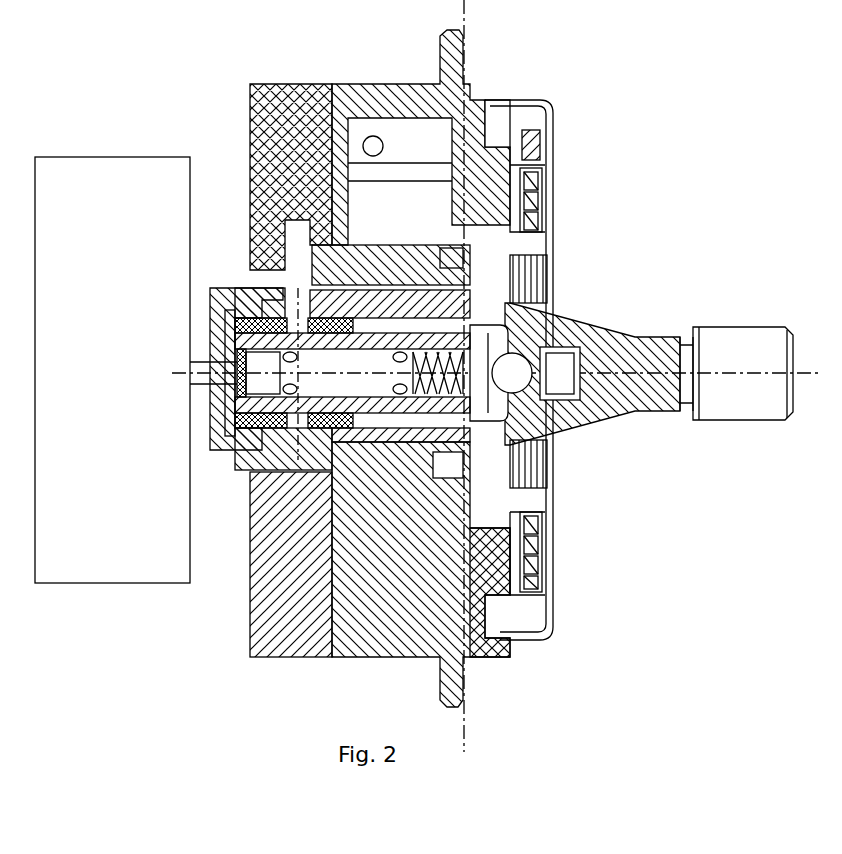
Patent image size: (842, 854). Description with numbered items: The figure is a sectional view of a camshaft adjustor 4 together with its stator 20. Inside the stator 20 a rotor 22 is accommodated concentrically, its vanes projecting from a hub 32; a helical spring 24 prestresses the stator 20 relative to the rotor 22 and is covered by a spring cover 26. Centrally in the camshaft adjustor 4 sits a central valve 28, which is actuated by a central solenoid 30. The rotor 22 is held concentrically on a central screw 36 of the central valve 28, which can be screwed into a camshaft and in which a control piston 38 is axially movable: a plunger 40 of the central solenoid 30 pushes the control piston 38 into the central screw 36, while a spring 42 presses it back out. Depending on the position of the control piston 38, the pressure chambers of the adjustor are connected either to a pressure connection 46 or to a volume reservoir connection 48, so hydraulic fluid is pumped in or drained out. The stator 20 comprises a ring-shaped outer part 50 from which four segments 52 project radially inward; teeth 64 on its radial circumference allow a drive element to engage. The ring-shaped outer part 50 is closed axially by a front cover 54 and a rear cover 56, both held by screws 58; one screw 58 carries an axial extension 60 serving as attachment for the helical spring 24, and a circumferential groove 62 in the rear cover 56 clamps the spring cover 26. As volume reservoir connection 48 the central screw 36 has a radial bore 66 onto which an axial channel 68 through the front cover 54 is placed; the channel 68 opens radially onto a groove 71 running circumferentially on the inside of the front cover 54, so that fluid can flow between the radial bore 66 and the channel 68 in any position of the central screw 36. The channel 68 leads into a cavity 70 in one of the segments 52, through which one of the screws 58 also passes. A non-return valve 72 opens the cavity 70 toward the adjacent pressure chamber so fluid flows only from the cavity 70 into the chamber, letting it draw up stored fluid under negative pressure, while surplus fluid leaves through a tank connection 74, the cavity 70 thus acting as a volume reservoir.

The camshaft adjustor 4 is at (720, 86).
The stator 20 is at (373, 136).
The rotor 22 is at (430, 473).
The helical spring 24 is at (540, 192).
The spring cover 26 is at (557, 130).
The central valve 28 is at (600, 300).
The central solenoid 30 is at (100, 157).
The hub 32 is at (333, 487).
The central screw 36 is at (640, 330).
The control piston 38 is at (250, 292).
The plunger 40 is at (205, 430).
The spring 42 is at (630, 323).
The pressure connection 46 is at (528, 300).
The volume reservoir connection 48 is at (312, 375).
The ring-shaped outer part 50 is at (397, 95).
The segments 52 is at (285, 200).
The front cover 54 is at (253, 633).
The rear cover 56 is at (487, 570).
The screws 58 is at (492, 110).
The axial extension 60 is at (537, 163).
The circumferential groove 62 is at (498, 97).
The teeth 64 is at (460, 47).
The radial bore 66 is at (292, 260).
The axial channel 68 is at (262, 262).
The cavity 70 is at (297, 233).
The groove 71 is at (300, 195).
The non-return valve 72 is at (372, 205).
The tank connection 74 is at (463, 235).